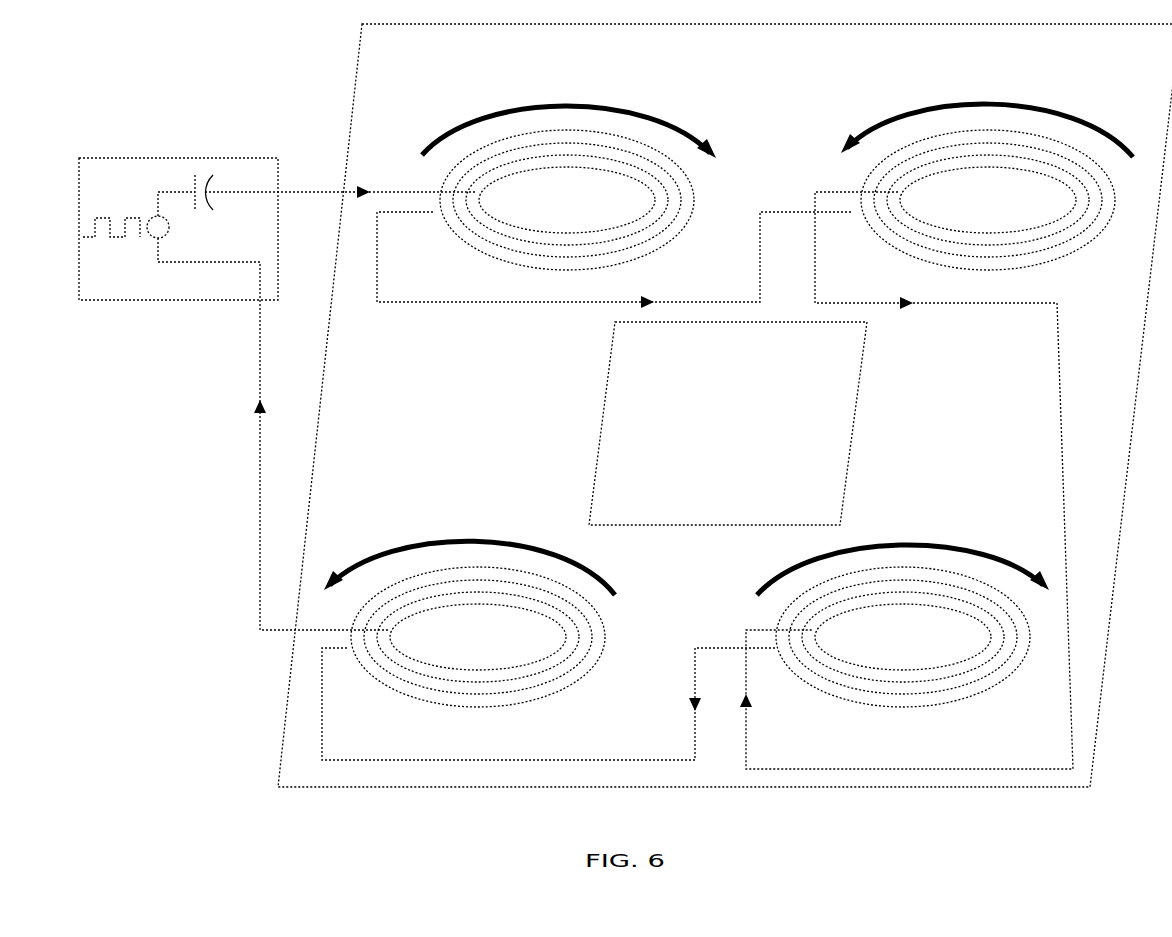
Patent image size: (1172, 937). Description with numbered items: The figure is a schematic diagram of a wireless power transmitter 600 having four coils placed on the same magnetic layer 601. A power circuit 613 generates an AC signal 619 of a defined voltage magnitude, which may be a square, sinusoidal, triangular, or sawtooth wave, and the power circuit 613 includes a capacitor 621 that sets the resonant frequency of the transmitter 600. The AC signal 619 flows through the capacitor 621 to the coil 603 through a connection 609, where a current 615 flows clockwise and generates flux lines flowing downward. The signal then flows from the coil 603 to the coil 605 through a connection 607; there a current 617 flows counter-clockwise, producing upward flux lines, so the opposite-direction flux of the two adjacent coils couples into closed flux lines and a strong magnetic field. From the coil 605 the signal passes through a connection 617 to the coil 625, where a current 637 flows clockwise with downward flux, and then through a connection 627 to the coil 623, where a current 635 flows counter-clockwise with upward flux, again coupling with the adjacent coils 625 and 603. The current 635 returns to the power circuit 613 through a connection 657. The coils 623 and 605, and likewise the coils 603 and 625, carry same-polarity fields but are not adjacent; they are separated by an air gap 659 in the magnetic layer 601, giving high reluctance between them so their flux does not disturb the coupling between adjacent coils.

The wireless power transmitter 600 is at (296, 104).
The magnetic layer 601 is at (345, 787).
The coil 603 is at (481, 255).
The coil 605 is at (1020, 268).
The connection 607 is at (504, 303).
The connection 609 is at (299, 190).
The power circuit 613 is at (178, 244).
The current 615 is at (550, 106).
The current 617 is at (1014, 104).
The AC signal 619 is at (122, 242).
The capacitor 621 is at (205, 214).
The coil 623 is at (503, 707).
The coil 625 is at (942, 705).
The connection 627 is at (633, 760).
The current 635 is at (438, 544).
The current 637 is at (952, 544).
The connection 657 is at (257, 498).
The air gap 659 is at (692, 400).